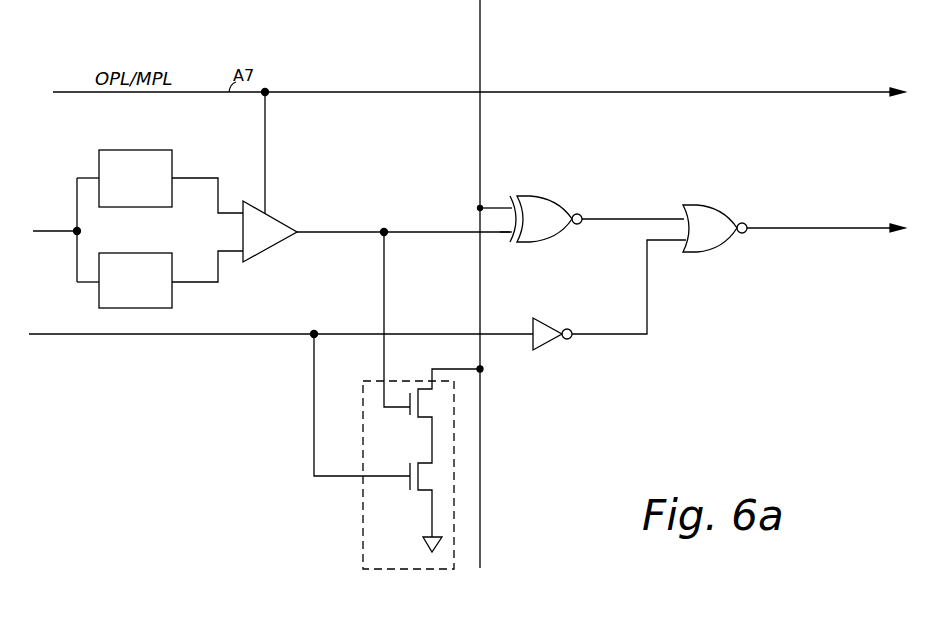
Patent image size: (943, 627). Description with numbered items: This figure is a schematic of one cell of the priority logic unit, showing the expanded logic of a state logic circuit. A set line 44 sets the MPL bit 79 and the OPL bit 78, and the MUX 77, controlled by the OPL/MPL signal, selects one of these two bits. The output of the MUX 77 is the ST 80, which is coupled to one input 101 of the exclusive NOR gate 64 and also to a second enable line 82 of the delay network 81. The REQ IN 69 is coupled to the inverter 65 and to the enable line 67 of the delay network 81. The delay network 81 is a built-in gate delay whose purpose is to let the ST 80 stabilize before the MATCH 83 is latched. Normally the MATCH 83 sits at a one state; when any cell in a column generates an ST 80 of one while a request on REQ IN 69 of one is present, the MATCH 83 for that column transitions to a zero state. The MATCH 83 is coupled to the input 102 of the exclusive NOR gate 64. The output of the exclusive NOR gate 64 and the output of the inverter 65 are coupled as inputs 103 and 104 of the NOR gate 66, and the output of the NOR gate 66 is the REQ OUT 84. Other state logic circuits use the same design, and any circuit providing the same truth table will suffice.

The set line 44 is at (57, 234).
The exclusive NOR gate 64 is at (548, 197).
The inverter 65 is at (548, 345).
The NOR gate 66 is at (710, 205).
The enable line 67 is at (314, 423).
The REQ IN 69 is at (142, 338).
The MUX 77 is at (262, 257).
The OPL bit 78 is at (172, 300).
The MPL bit 79 is at (172, 153).
The ST 80 is at (355, 237).
The delay network 81 is at (360, 519).
The second enable line 82 is at (384, 303).
The MATCH 83 is at (480, 68).
The REQ OUT 84 is at (780, 232).
The input 101 is at (496, 240).
The input 102 is at (493, 206).
The input 103 is at (648, 215).
The input 104 is at (665, 243).